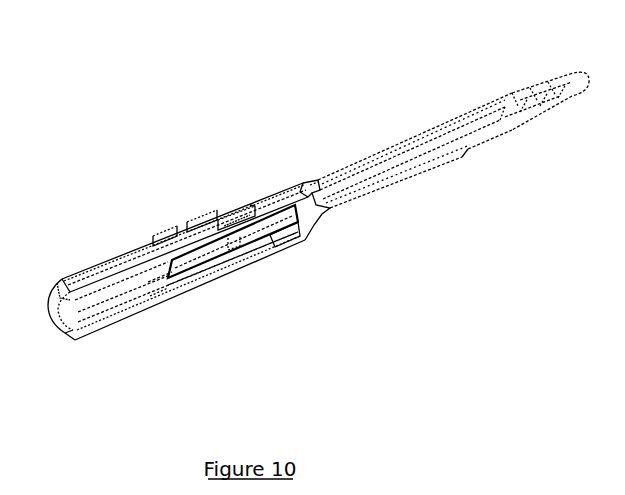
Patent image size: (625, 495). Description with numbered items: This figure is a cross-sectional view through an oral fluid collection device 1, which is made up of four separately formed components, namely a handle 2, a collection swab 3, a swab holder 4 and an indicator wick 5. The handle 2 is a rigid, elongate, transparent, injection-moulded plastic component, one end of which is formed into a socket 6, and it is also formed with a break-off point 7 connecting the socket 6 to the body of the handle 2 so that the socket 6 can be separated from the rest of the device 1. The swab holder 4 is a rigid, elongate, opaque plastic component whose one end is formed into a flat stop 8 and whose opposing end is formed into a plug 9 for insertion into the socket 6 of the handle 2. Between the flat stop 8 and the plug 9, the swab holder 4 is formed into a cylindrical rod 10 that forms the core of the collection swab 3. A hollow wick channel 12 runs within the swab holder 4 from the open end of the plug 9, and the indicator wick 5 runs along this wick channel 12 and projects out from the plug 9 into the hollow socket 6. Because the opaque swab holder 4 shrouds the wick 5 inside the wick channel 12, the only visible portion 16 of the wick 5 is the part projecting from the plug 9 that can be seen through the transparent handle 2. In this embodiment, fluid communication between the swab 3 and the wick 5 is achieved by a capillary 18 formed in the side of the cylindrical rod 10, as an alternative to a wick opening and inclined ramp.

The oral fluid collection device 1 is at (300, 97).
The handle 2 is at (329, 203).
The collection swab 3 is at (100, 262).
The swab holder 4 is at (103, 302).
The indicator wick 5 is at (251, 233).
The socket 6 is at (246, 208).
The break-off point 7 is at (307, 205).
The flat stop 8 is at (53, 318).
The plug 9 is at (228, 233).
The cylindrical rod 10 is at (151, 292).
The wick channel 12 is at (232, 247).
The visible portion 16 is at (290, 241).
The capillary 18 is at (175, 248).